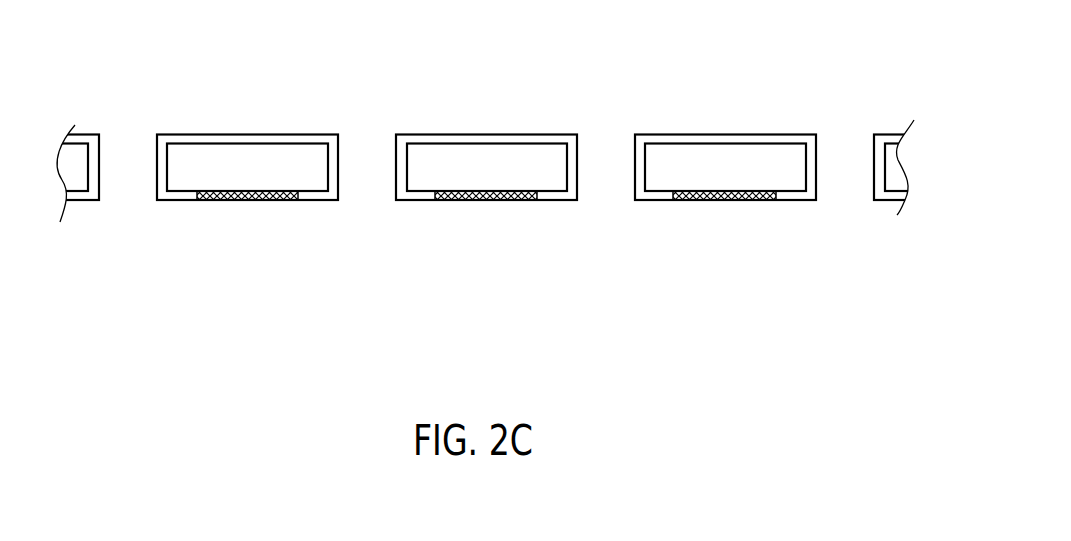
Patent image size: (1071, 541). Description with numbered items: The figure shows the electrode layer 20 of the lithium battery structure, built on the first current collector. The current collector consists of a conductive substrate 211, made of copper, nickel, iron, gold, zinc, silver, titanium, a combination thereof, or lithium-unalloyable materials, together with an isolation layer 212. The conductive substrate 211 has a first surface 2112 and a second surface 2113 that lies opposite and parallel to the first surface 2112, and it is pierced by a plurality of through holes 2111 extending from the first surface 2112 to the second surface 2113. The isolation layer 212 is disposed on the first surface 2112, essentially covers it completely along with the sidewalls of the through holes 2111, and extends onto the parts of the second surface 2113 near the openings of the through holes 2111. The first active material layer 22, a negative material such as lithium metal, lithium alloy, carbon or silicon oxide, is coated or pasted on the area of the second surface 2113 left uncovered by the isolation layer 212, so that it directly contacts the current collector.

The electrode layer 20 is at (288, 87).
The conductive substrate 211 is at (697, 180).
The through holes 2111 is at (610, 148).
The first surface 2112 is at (500, 145).
The second surface 2113 is at (470, 200).
The isolation layer 212 is at (165, 200).
The first active material layer 22 is at (247, 200).